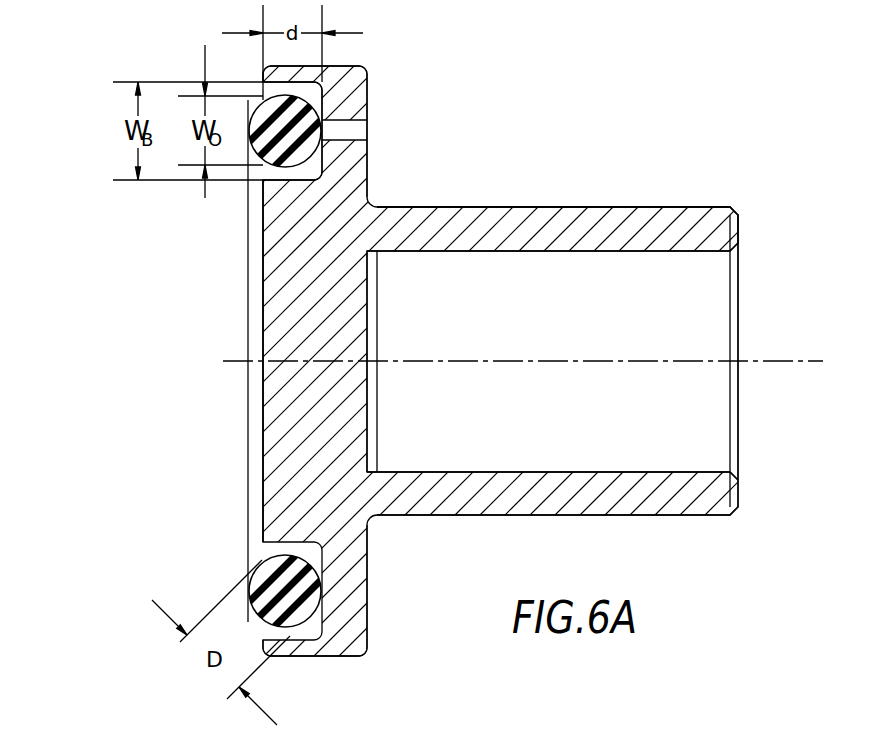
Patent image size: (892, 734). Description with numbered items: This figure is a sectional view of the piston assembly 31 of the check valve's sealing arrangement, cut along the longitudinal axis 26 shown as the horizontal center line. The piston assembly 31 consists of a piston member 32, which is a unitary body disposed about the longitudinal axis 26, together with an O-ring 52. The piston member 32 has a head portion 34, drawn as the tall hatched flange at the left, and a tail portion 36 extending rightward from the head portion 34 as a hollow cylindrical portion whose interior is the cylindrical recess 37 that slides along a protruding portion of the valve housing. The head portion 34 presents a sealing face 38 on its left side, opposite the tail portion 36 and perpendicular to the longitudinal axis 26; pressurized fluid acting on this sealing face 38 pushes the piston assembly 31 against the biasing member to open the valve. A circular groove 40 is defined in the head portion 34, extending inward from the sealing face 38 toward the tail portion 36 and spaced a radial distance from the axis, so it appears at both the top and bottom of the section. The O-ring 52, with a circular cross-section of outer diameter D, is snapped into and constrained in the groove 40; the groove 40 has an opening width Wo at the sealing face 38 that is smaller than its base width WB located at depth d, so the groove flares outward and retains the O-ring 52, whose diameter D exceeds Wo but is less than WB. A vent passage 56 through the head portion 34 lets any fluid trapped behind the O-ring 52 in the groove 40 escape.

The longitudinal axis 26 is at (512, 360).
The piston assembly 31 is at (140, 245).
The piston member 32 is at (488, 218).
The head portion 34 is at (338, 73).
The tail portion 36 is at (640, 218).
The bore 37 is at (708, 403).
The sealing face 38 is at (262, 387).
The circular groove 40 is at (312, 178).
The O-ring 52 is at (302, 112).
The vent passage 56 is at (353, 129).